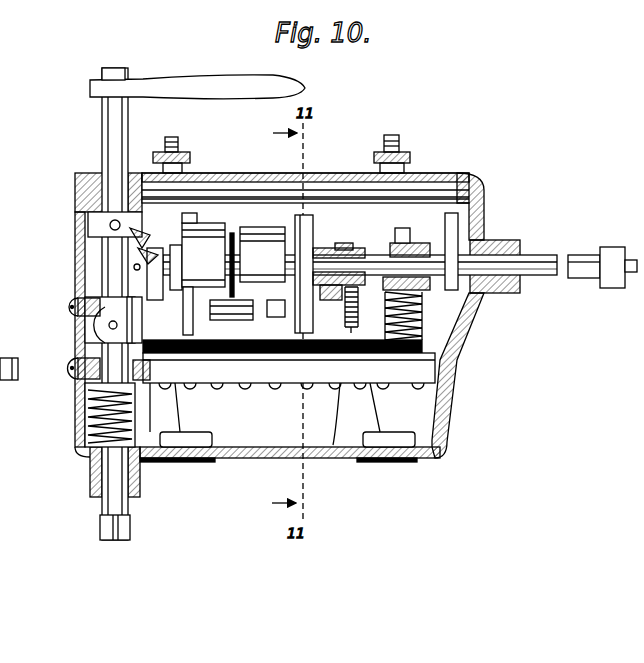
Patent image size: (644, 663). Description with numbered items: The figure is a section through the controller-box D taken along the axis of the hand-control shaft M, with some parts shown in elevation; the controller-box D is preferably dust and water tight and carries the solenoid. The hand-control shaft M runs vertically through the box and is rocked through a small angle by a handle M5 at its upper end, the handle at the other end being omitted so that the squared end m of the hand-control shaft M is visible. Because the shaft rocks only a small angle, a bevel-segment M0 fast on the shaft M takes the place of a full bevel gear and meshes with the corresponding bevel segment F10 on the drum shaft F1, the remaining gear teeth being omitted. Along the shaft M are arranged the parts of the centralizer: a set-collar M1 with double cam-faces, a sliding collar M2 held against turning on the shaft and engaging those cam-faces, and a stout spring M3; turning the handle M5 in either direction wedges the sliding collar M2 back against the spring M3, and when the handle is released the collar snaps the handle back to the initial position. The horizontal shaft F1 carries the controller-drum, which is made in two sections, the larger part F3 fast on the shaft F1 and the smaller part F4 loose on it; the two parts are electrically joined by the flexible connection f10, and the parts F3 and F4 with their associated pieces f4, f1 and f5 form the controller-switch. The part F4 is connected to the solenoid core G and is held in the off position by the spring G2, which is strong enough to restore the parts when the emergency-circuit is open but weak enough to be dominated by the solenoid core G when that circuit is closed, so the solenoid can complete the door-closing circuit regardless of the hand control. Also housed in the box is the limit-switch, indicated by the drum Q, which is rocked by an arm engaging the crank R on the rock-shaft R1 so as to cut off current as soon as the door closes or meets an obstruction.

The handle M5 is at (215, 78).
The hand-control shaft M is at (110, 135).
The bevel-segment M0 is at (132, 243).
The pawl F10 is at (135, 236).
The set-collar M1 is at (88, 325).
The sliding collar M2 is at (97, 352).
The spring M3 is at (86, 408).
The squared end m is at (133, 528).
The controller-box D is at (247, 456).
The controller-drum part F3 is at (222, 232).
The cam block f4 is at (203, 279).
The lower block f1 is at (225, 307).
The cam block f5 is at (262, 272).
The flexible connection f10 is at (302, 233).
The controller-drum part F4 is at (327, 257).
The shaft F1 is at (347, 270).
The drum Q is at (427, 288).
The solenoid core G is at (346, 312).
The spring G2 is at (417, 322).
The crank R is at (458, 240).
The rock-shaft R1 is at (545, 278).